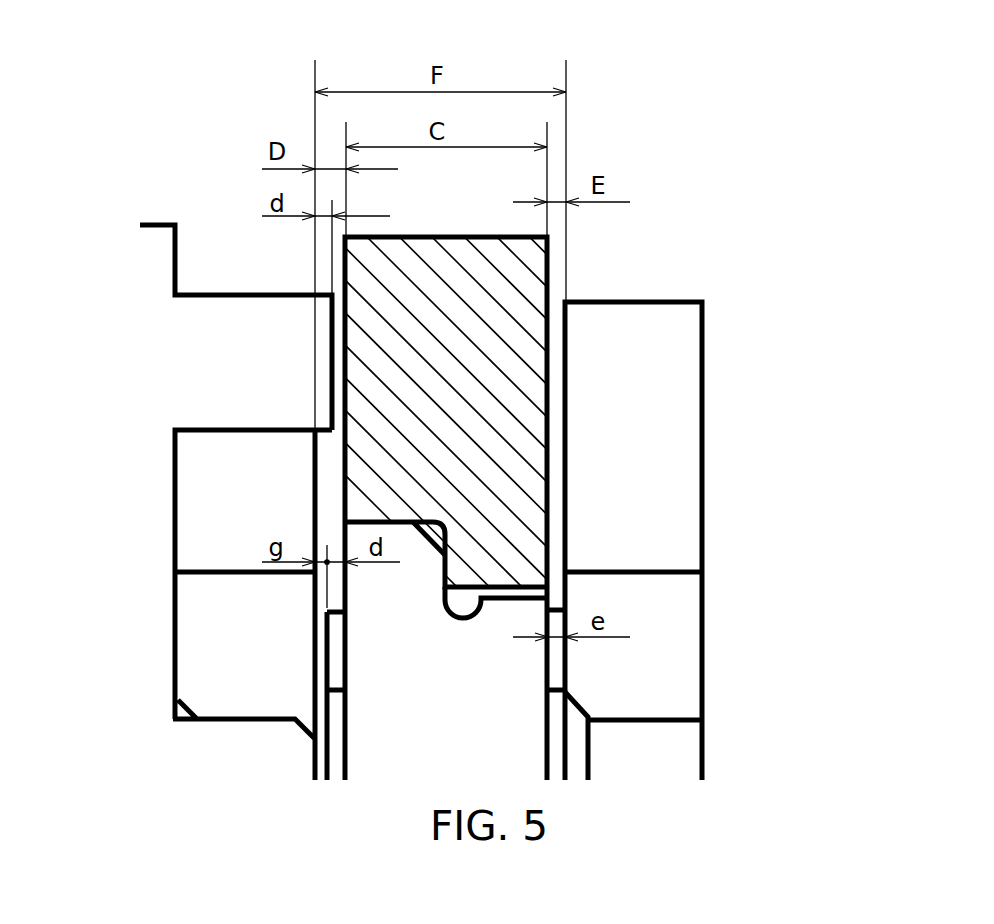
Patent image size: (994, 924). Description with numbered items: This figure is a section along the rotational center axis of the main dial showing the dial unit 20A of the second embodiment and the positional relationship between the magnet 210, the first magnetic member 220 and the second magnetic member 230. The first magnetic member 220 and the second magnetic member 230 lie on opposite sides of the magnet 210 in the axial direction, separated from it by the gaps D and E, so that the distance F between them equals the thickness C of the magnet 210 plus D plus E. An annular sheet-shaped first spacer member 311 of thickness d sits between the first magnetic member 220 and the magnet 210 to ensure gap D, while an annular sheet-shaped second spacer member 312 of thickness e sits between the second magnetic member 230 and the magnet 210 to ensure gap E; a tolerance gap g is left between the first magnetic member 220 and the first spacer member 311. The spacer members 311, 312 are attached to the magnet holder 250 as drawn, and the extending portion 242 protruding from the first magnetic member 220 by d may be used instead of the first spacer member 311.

The dial unit 20A is at (612, 146).
The magnet 210 is at (465, 262).
The first magnetic member 220 is at (240, 477).
The second magnetic member 230 is at (650, 317).
The extending portion 242 is at (247, 312).
The magnet holder 250 is at (523, 713).
The first spacer member 311 is at (337, 645).
The second spacer member 312 is at (567, 600).